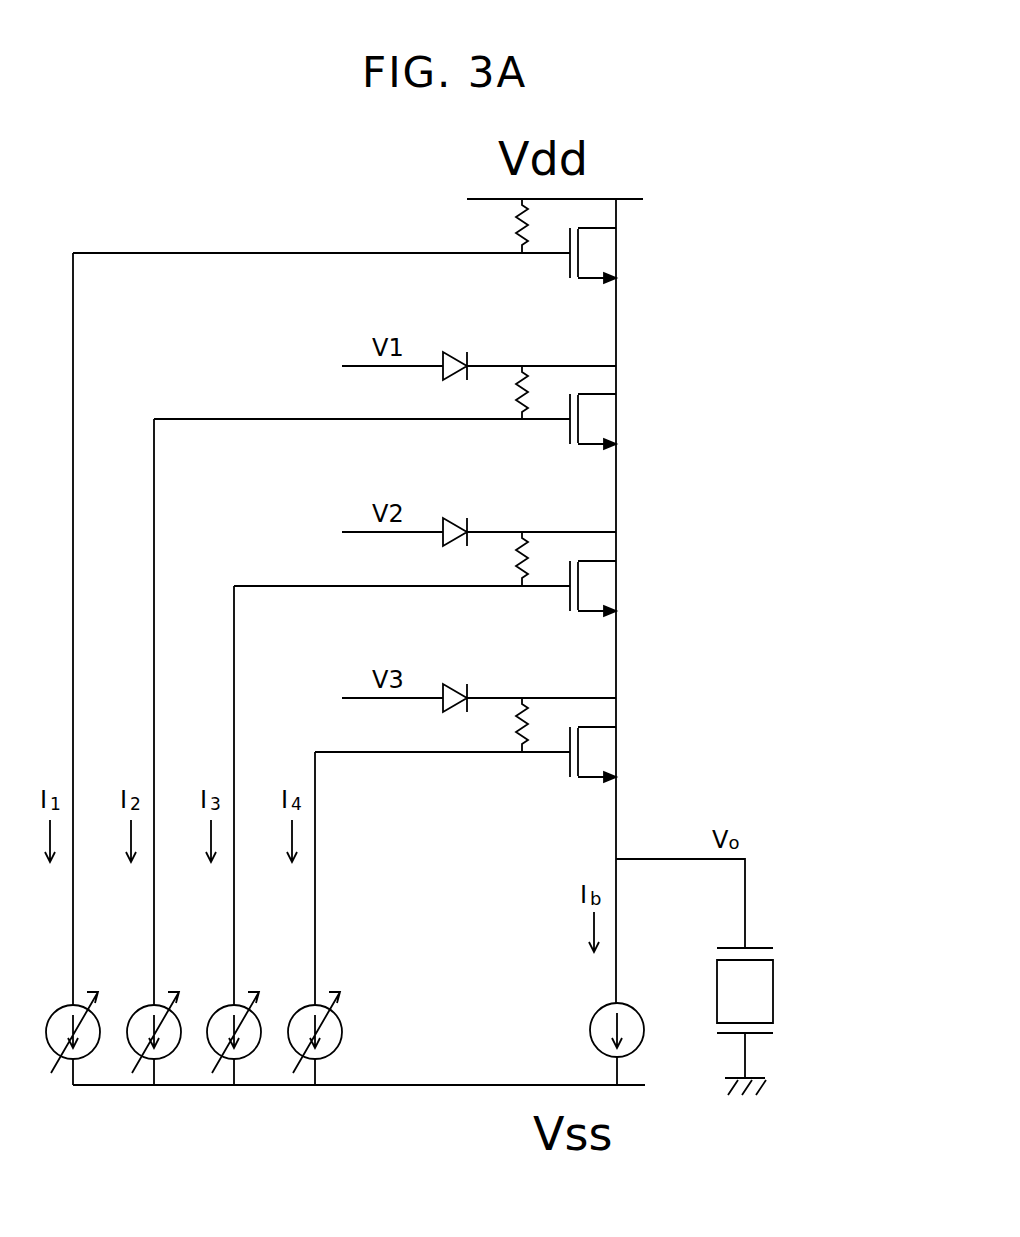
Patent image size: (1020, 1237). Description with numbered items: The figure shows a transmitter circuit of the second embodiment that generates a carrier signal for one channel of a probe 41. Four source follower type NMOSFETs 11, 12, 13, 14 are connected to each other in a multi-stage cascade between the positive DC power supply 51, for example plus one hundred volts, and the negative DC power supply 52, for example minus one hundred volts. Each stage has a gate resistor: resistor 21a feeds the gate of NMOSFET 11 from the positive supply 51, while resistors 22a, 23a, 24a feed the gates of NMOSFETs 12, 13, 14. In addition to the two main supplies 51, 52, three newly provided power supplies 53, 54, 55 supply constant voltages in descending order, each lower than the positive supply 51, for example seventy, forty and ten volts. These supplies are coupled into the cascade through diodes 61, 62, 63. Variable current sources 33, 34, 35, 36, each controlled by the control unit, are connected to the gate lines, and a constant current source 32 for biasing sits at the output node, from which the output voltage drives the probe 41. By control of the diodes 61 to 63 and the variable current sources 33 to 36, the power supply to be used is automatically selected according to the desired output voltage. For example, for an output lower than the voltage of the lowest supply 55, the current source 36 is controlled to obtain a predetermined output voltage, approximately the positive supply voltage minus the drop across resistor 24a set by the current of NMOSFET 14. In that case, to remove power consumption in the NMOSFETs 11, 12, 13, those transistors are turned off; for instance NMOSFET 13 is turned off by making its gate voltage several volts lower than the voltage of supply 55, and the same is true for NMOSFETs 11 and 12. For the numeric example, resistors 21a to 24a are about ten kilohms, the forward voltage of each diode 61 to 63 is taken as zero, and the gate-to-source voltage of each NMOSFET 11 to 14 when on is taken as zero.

The source follower type NMOSFET 11 is at (606, 252).
The source follower type NMOSFET 12 is at (606, 418).
The source follower type NMOSFET 13 is at (606, 585).
The source follower type NMOSFET 14 is at (606, 751).
The resistor 21a is at (512, 233).
The resistor 22a is at (512, 399).
The resistor 23a is at (512, 565).
The resistor 24a is at (520, 733).
The constant current source for biasing 32 is at (590, 1030).
The variable current source 33 is at (75, 1006).
The variable current source 34 is at (156, 1006).
The variable current source 35 is at (236, 1006).
The variable current source 36 is at (317, 1006).
The probe for one channel 41 is at (773, 992).
The DC power supply Vdd 51 is at (607, 199).
The DC power supply Vss 52 is at (628, 1086).
The power supply V1 53 is at (358, 365).
The power supply V2 54 is at (358, 531).
The power supply V3 55 is at (358, 697).
The diode 61 is at (455, 350).
The diode 62 is at (455, 516).
The diode 63 is at (455, 682).